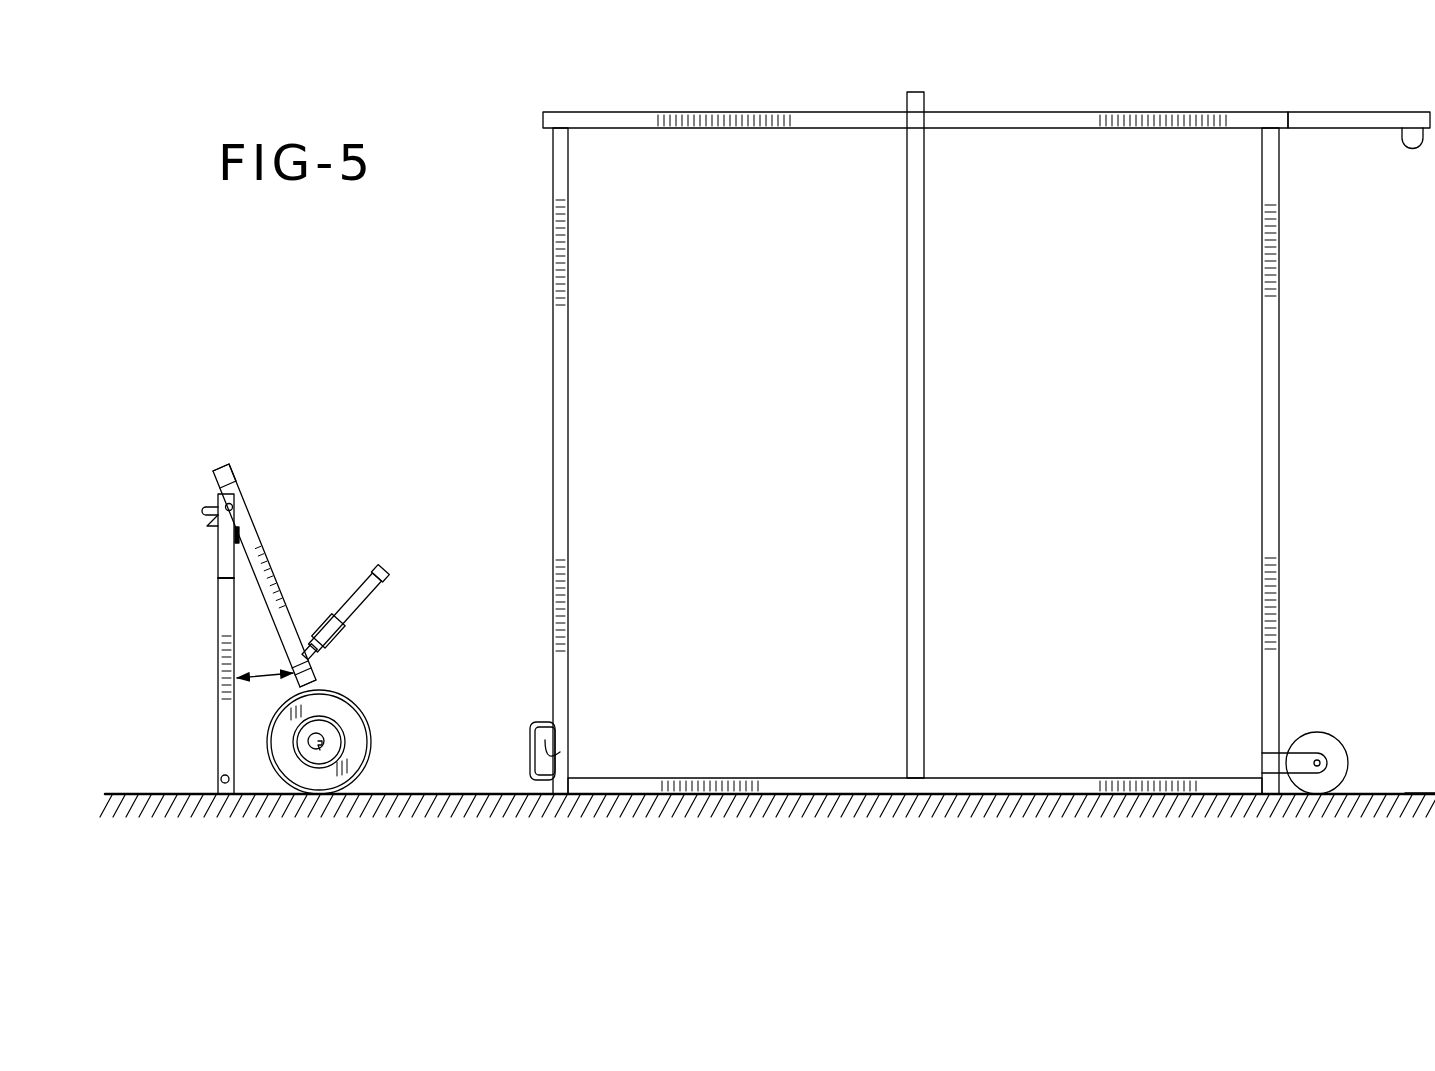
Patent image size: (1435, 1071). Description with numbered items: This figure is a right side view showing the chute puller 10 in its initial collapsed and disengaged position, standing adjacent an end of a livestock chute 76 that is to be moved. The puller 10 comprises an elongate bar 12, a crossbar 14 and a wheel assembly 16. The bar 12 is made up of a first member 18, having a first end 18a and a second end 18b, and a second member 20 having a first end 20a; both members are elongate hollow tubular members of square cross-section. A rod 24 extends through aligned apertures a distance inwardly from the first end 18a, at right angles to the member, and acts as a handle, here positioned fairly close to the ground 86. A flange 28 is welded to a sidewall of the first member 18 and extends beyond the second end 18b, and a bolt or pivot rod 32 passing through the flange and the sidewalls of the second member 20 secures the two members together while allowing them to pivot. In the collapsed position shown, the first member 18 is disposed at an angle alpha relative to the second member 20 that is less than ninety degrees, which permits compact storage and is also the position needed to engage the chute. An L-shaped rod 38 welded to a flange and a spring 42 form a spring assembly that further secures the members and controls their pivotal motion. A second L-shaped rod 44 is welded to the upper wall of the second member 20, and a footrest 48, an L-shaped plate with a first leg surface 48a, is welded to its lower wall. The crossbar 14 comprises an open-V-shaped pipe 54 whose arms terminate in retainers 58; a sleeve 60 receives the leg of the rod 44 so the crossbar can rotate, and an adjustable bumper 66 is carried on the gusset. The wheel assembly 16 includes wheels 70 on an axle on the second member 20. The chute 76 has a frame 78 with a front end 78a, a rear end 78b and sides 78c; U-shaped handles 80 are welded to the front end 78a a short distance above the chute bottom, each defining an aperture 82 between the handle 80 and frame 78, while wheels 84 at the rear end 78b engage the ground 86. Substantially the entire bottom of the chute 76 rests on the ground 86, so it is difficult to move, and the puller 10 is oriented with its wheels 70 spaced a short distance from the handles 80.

The chute puller 10 is at (290, 591).
The elongate bar 12 is at (217, 678).
The crossbar 14 is at (373, 623).
The wheel assembly 16 is at (375, 742).
The first member 18 is at (166, 644).
The first end of first member 18a is at (216, 756).
The second end of first member 18b is at (216, 598).
The second member 20 is at (269, 563).
The first end of second member 20a is at (240, 468).
The rod 24 is at (221, 778).
The flange 28 is at (218, 578).
The bolt or pivot rod 32 is at (234, 506).
The L-shaped rod 38 is at (214, 508).
The spring 42 is at (212, 522).
The second L-shaped rod 44 is at (320, 676).
The footrest 48 is at (205, 703).
The first leg surface 48a is at (292, 688).
The pipe 54 is at (370, 605).
The retainer 58 is at (376, 580).
The sleeve 60 is at (324, 620).
The bumper 66 is at (330, 650).
The wheel 70 is at (358, 752).
The livestock chute 76 is at (927, 417).
The frame 78 is at (925, 418).
The front end of frame 78a is at (552, 380).
The rear end of frame 78b is at (1282, 242).
The side of frame 78c is at (833, 776).
The U-shaped handle 80 is at (530, 750).
The aperture 82 is at (560, 752).
The wheel 84 is at (1325, 742).
The ground 86 is at (1405, 793).